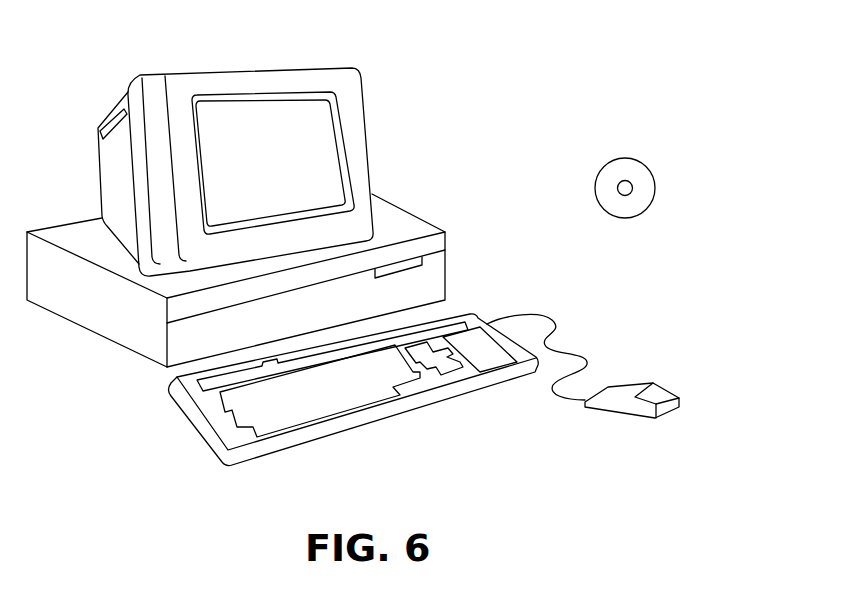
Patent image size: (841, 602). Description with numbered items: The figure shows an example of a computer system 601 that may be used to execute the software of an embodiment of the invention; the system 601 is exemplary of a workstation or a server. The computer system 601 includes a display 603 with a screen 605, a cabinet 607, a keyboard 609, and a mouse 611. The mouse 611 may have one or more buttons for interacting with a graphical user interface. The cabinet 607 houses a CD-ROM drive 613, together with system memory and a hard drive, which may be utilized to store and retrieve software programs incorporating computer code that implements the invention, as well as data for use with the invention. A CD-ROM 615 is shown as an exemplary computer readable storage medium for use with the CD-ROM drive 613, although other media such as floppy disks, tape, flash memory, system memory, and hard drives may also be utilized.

The computer system 601 is at (556, 44).
The display 603 is at (370, 172).
The screen 605 is at (334, 126).
The cabinet 607 is at (127, 353).
The keyboard 609 is at (362, 427).
The mouse 611 is at (670, 390).
The CD-ROM drive 613 is at (423, 257).
The CD-ROM 615 is at (637, 159).